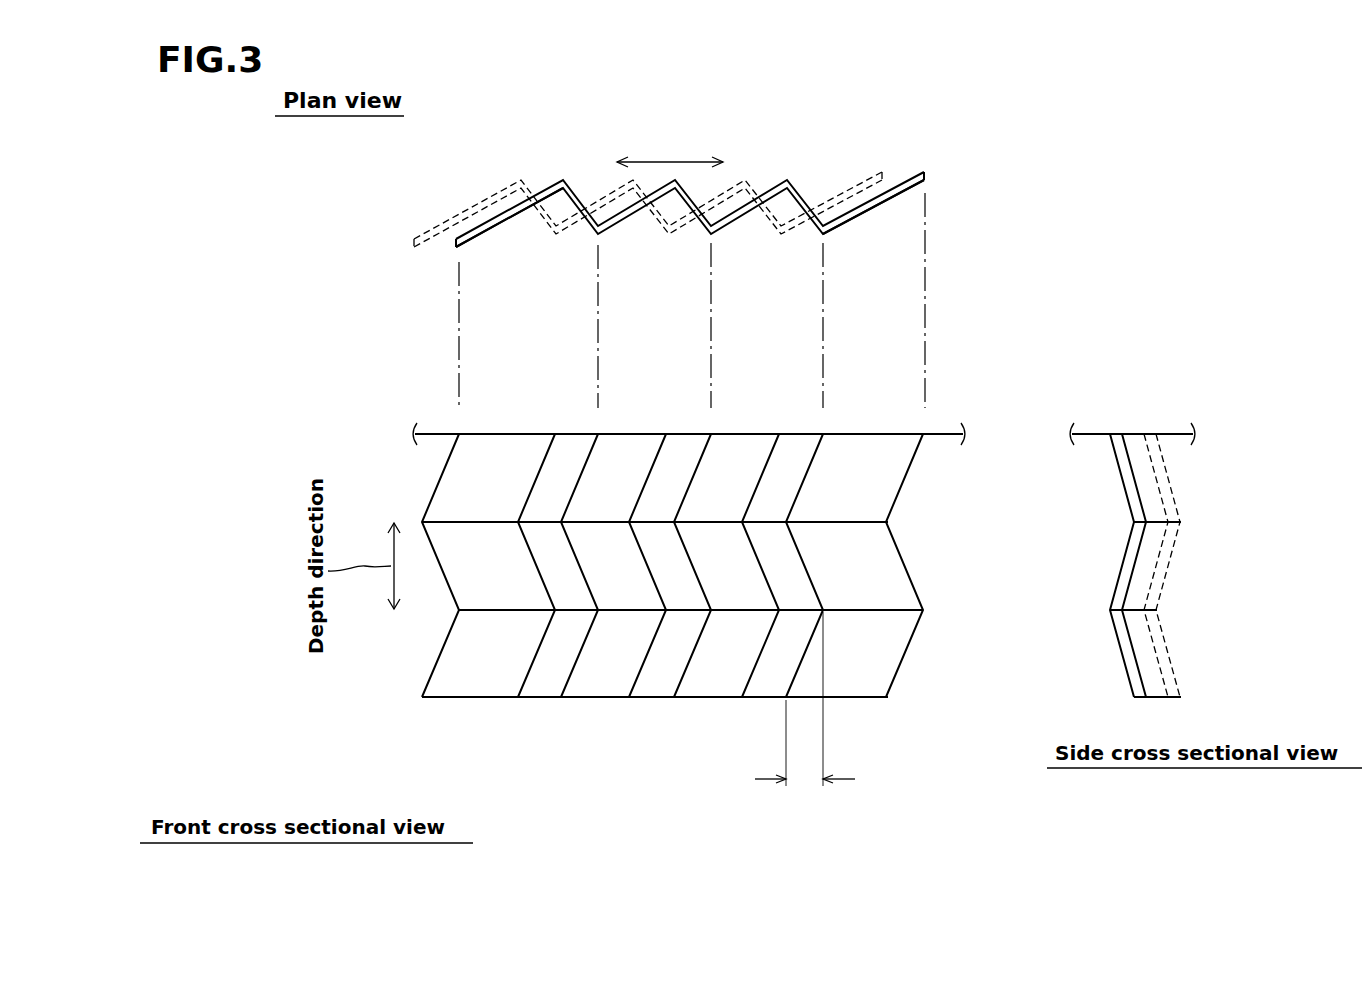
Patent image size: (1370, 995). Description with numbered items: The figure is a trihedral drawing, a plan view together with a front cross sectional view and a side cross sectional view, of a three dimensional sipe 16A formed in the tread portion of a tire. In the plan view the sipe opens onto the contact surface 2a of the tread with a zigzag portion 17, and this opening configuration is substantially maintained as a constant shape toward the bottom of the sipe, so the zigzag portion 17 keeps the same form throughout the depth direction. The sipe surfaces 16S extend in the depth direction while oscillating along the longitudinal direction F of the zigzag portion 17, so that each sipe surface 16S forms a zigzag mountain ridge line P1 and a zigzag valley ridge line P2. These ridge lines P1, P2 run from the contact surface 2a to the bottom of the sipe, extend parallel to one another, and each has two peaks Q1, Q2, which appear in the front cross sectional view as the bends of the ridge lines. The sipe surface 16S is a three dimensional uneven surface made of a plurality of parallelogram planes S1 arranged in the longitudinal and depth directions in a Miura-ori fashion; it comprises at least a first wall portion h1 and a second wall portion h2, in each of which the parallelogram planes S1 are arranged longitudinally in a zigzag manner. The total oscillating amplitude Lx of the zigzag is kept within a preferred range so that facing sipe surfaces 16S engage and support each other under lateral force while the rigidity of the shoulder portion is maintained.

The three dimensional sipe 16A is at (430, 710).
The zigzag portion 17 is at (483, 207).
The sipe surface 16S is at (512, 213).
The zigzag mountain ridge line P1 is at (823, 233).
The zigzag valley ridge line P2 is at (805, 176).
The contact surface 2a is at (945, 432).
The parallelogram plane S1 is at (743, 447).
The first wall portion h1 is at (890, 484).
The second wall portion h2 is at (900, 592).
The peak Q1 is at (793, 527).
The peak Q2 is at (835, 620).
The longitudinal direction F is at (675, 160).
The total oscillating amplitude Lx is at (803, 781).